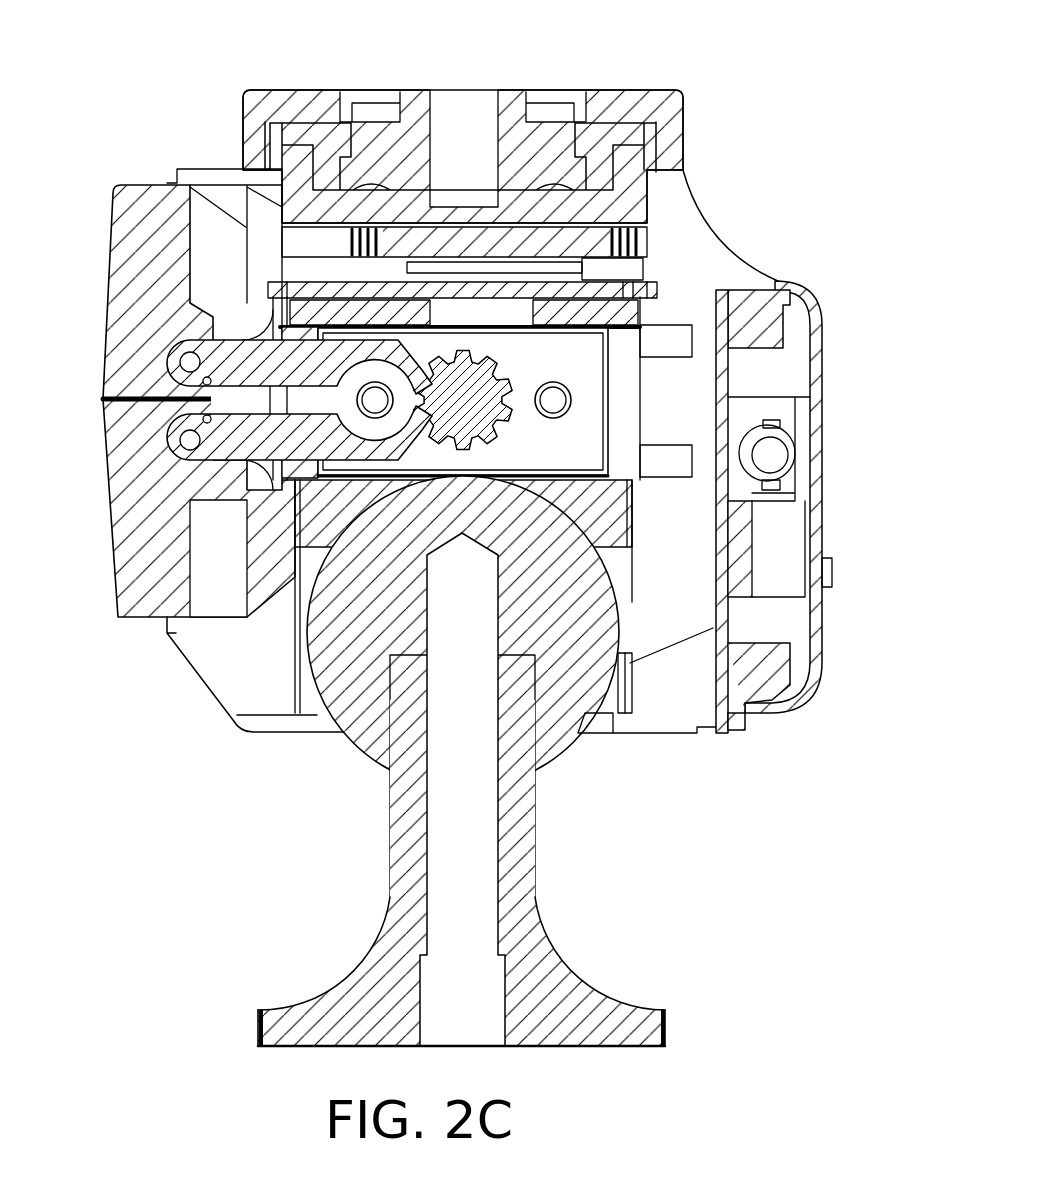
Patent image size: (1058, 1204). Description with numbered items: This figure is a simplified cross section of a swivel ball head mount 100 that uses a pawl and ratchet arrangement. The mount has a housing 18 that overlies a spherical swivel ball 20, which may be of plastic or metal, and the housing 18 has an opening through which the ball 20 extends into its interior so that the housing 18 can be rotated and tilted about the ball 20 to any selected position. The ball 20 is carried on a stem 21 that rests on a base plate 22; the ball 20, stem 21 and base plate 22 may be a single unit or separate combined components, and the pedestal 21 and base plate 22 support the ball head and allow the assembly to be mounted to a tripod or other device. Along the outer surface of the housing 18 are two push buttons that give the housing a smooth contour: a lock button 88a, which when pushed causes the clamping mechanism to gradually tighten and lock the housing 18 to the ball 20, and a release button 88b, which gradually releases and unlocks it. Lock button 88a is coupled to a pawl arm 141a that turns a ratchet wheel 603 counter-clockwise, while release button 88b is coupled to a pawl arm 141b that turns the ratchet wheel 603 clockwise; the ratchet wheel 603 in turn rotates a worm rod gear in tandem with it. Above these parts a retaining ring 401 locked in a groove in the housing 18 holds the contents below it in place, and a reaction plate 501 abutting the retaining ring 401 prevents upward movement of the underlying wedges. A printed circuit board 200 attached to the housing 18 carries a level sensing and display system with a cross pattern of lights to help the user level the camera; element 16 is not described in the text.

The upper housing cap 16 is at (678, 113).
The housing 18 is at (215, 683).
The spherical swivel ball 20 is at (372, 740).
The stem 21 is at (395, 915).
The base plate 22 is at (255, 1032).
The lock button 88a is at (123, 330).
The release button 88b is at (127, 507).
The swivel ball head mount 100 is at (805, 203).
The pawl arm 141a is at (125, 363).
The pawl arm 141b is at (120, 449).
The printed circuit board 200 is at (812, 402).
The retaining ring 401 is at (643, 318).
The reaction plate 501 is at (650, 256).
The ratchet wheel 603 is at (483, 350).